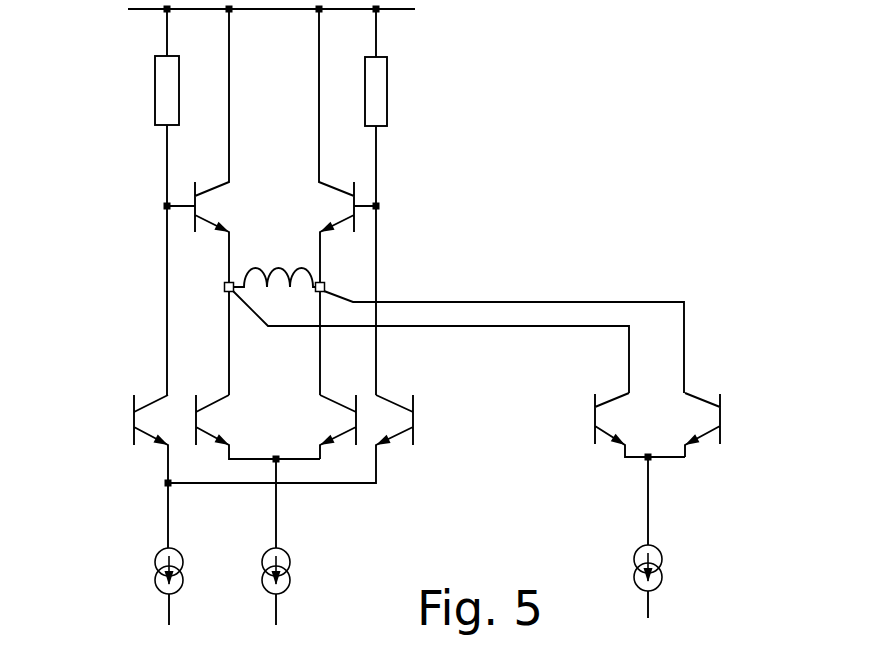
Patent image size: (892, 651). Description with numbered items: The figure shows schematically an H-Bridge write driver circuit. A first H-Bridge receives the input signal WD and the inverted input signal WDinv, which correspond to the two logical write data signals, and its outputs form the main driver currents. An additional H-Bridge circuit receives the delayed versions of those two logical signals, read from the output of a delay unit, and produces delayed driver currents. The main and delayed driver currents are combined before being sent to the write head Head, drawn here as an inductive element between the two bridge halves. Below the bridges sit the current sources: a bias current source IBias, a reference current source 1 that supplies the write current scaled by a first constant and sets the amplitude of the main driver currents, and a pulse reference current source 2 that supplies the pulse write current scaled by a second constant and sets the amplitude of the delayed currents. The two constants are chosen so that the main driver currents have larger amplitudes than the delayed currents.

The write head Head is at (275, 263).
The input signal WD is at (196, 420).
The input signal WDinv is at (356, 420).
The bias current source IBias is at (138, 586).
The constant K1 1 is at (328, 586).
The constant K2 2 is at (718, 565).